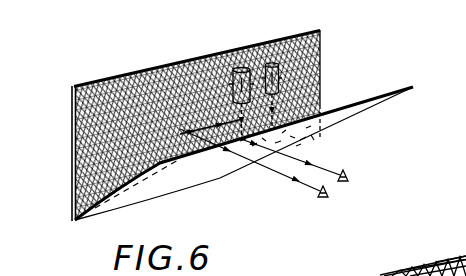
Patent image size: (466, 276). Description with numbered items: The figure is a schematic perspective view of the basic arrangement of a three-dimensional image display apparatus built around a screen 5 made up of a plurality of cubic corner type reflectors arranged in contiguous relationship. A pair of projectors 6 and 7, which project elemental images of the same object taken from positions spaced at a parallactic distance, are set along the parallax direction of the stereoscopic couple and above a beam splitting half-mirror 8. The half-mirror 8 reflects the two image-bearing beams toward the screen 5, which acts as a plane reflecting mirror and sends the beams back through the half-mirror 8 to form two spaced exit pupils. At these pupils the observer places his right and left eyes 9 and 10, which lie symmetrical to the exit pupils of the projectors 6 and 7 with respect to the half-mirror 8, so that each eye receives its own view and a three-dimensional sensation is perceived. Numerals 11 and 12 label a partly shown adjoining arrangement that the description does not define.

The screen 5 is at (73, 117).
The projector 6 is at (274, 62).
The projector 7 is at (243, 67).
The half-mirror 8 is at (361, 101).
The right eye 9 is at (346, 182).
The left eye 10 is at (321, 195).
The mesh strip 11 is at (412, 271).
The mesh strip layer 12 is at (447, 263).